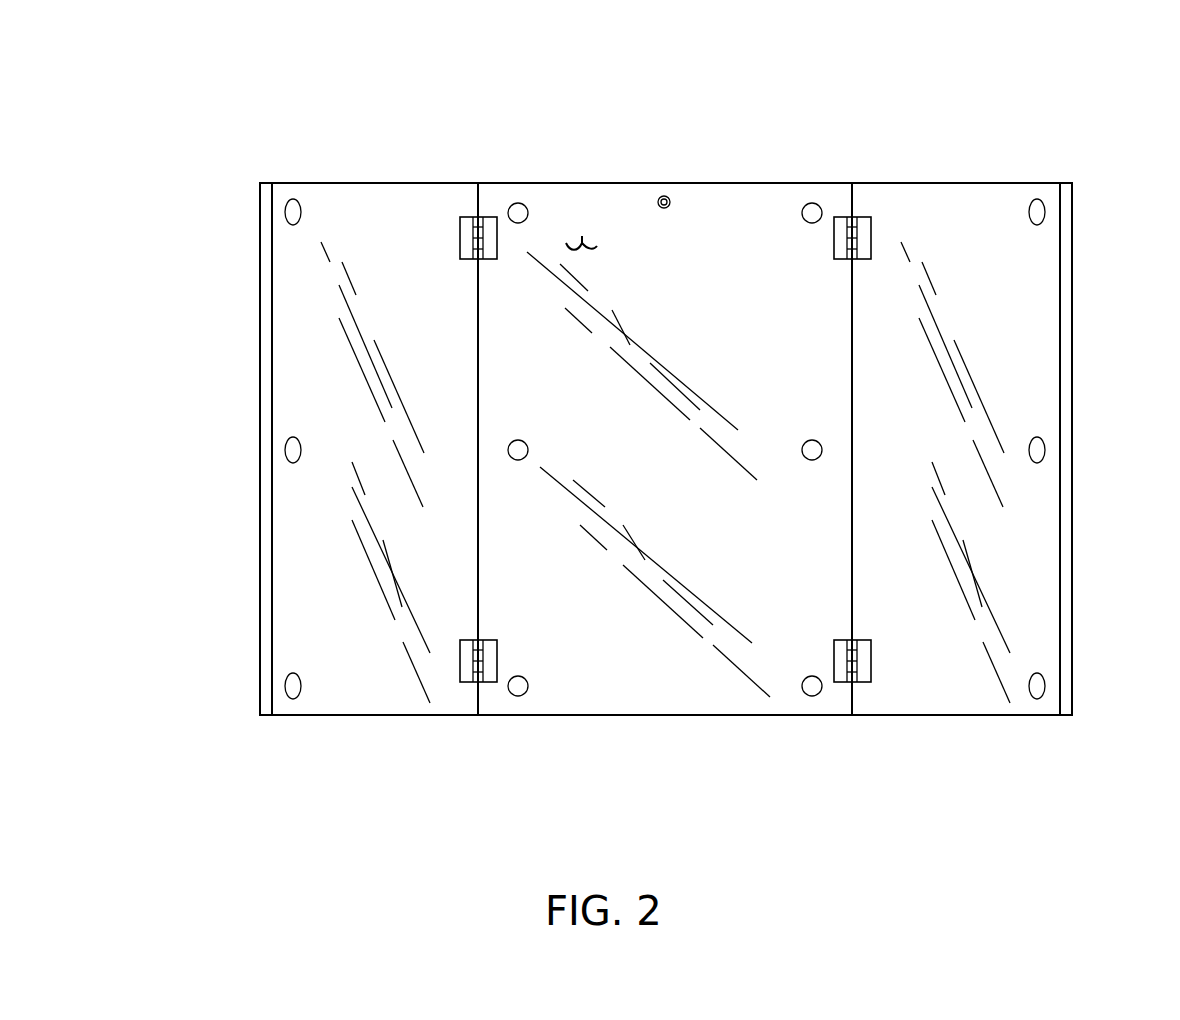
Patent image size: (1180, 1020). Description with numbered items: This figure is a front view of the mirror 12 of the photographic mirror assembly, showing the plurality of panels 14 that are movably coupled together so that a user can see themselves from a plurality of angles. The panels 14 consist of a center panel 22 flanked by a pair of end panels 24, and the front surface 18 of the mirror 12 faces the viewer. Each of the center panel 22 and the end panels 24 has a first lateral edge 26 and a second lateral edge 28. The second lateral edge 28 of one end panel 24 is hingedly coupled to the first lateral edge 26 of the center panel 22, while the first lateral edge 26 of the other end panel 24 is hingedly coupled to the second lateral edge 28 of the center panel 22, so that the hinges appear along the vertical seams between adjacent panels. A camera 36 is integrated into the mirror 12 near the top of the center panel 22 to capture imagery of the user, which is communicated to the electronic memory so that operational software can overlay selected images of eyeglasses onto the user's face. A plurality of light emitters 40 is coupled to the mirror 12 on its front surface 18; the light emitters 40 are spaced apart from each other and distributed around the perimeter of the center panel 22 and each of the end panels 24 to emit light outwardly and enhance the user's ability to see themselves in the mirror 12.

The mirror 12 is at (795, 55).
The panels 14 is at (350, 130).
The front surface 18 is at (582, 238).
The center panel 22 is at (650, 748).
The end panels 24 is at (335, 758).
The first lateral edge 26 is at (260, 541).
The second lateral edge 28 is at (1068, 619).
The camera 36 is at (670, 201).
The light emitters 40 is at (516, 202).